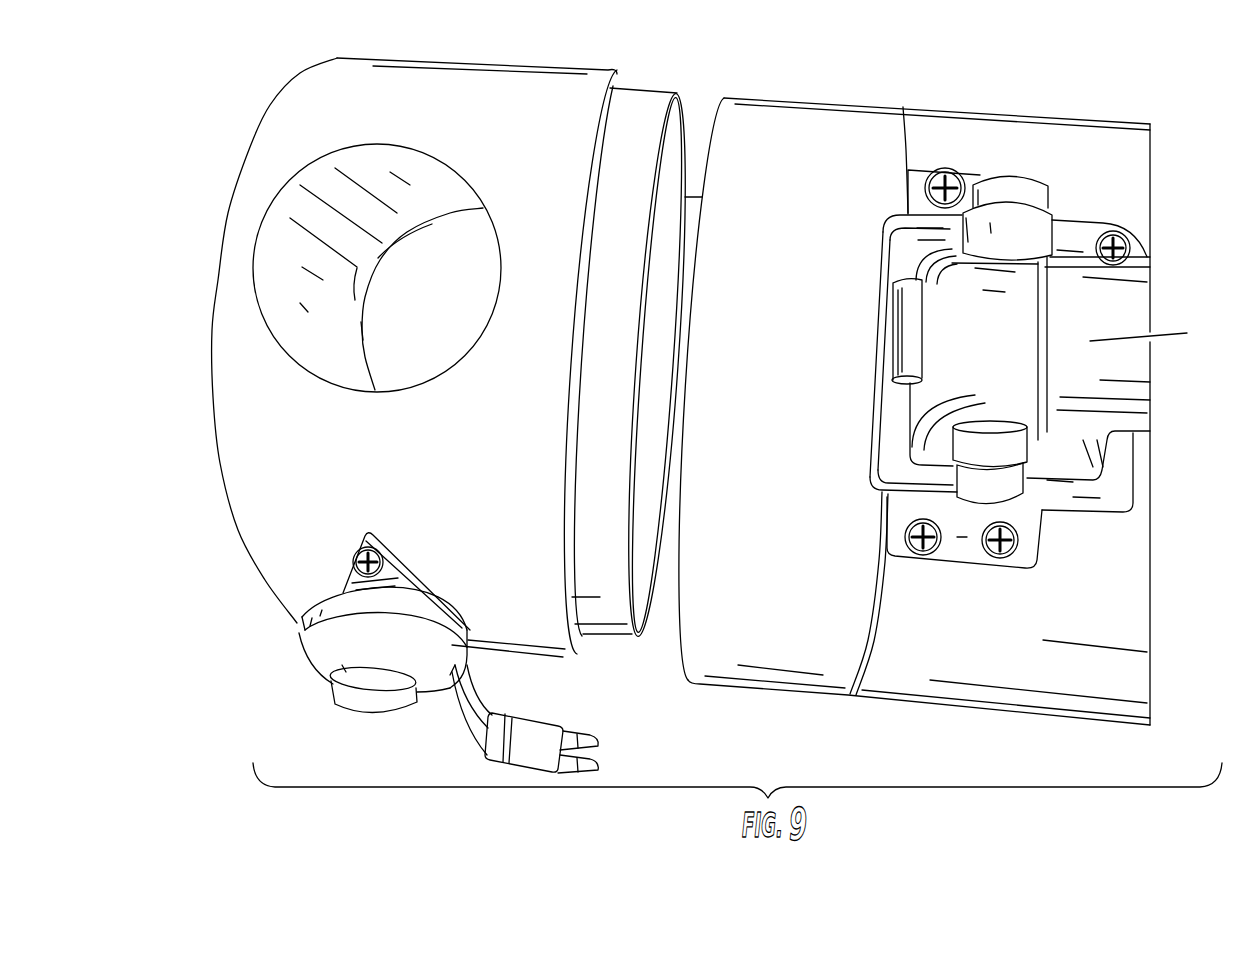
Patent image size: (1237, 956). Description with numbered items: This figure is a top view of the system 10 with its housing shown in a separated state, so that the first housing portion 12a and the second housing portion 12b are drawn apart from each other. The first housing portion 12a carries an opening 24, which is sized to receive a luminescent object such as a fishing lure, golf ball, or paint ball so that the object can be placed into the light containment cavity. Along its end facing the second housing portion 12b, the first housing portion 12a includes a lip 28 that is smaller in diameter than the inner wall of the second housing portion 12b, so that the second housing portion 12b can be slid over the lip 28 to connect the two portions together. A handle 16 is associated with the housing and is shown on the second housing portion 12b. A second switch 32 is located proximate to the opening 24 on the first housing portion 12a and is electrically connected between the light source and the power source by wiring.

The system 10 is at (724, 83).
The first housing portion 12a is at (317, 93).
The second housing portion 12b is at (1060, 140).
The handle 16 is at (1117, 285).
The opening 24 is at (298, 237).
The lip 28 is at (637, 103).
The second switch 32 is at (323, 658).